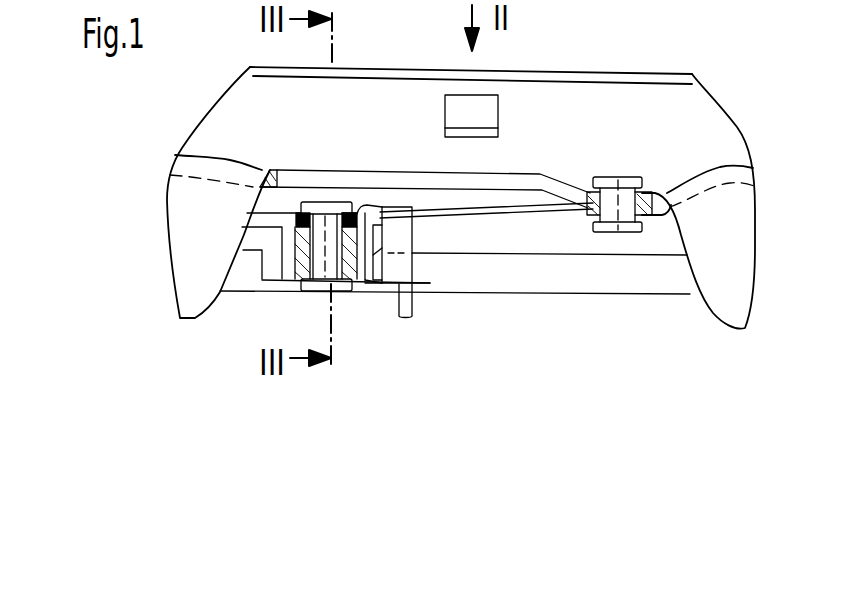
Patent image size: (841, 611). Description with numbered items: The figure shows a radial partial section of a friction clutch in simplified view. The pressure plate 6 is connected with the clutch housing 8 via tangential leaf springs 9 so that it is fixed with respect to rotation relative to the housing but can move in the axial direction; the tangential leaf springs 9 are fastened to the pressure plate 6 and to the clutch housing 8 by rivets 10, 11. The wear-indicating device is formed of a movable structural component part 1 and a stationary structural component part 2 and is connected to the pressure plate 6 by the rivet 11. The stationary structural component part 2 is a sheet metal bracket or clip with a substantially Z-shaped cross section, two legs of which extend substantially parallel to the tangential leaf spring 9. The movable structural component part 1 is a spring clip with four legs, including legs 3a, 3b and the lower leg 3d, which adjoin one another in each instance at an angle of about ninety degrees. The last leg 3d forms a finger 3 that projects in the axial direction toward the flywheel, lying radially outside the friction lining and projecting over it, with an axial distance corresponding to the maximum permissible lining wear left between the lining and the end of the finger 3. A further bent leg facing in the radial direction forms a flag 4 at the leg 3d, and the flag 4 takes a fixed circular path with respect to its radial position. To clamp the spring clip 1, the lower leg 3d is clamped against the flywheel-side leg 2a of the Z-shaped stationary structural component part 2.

The movable structural component part 1 is at (293, 210).
The stationary structural component part 2 is at (292, 225).
The flywheel-side leg 2a is at (388, 288).
The finger 3 is at (401, 292).
The leg 3a is at (378, 205).
The leg 3b is at (412, 226).
The lower leg 3d is at (412, 272).
The flag 4 is at (373, 282).
The pressure plate 6 is at (288, 260).
The clutch housing 8 is at (550, 186).
The tangential leaf spring 9 is at (510, 212).
The rivet 10 is at (628, 197).
The rivet 11 is at (318, 263).